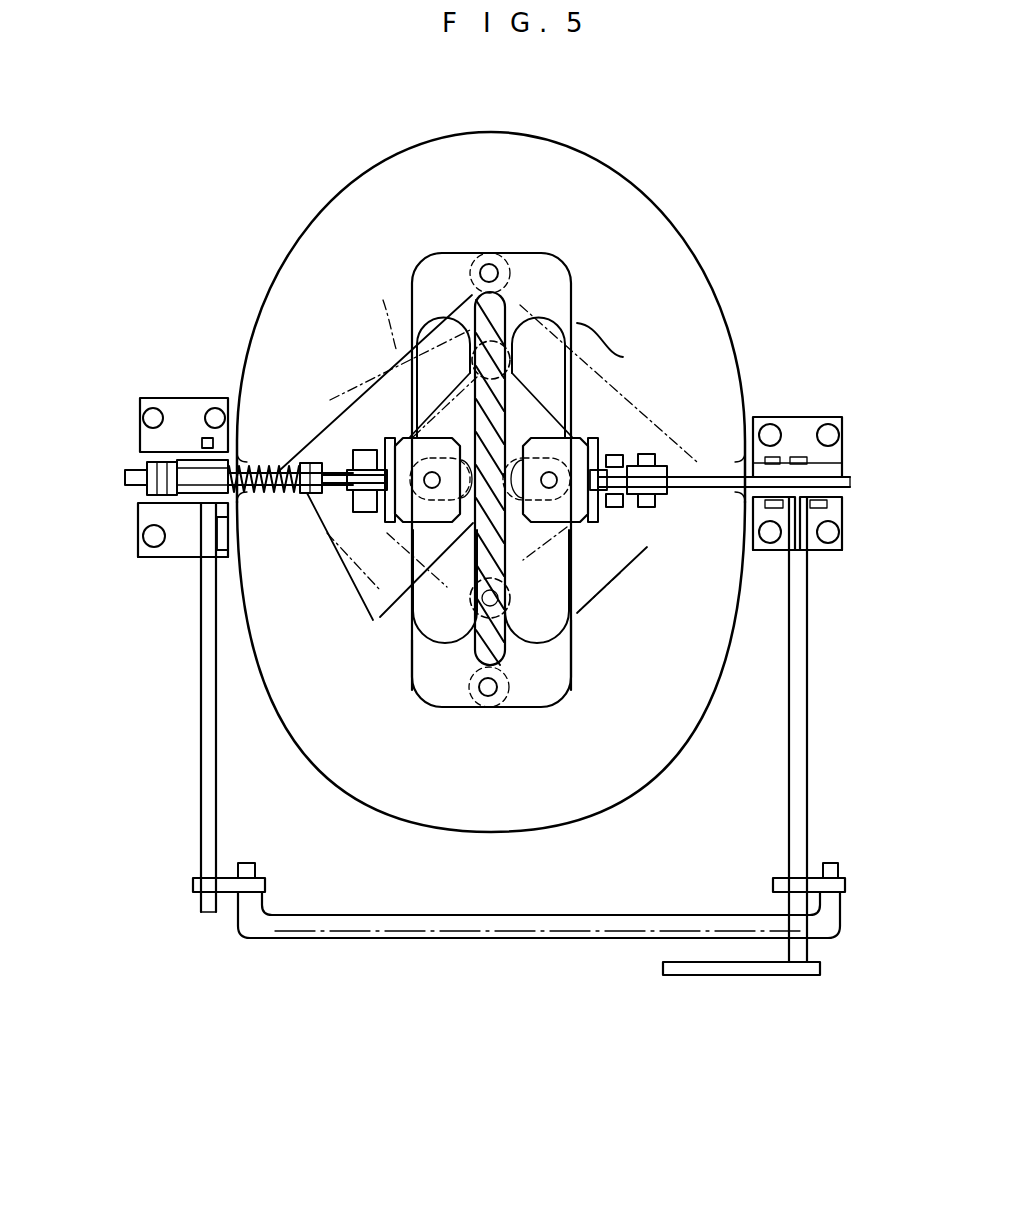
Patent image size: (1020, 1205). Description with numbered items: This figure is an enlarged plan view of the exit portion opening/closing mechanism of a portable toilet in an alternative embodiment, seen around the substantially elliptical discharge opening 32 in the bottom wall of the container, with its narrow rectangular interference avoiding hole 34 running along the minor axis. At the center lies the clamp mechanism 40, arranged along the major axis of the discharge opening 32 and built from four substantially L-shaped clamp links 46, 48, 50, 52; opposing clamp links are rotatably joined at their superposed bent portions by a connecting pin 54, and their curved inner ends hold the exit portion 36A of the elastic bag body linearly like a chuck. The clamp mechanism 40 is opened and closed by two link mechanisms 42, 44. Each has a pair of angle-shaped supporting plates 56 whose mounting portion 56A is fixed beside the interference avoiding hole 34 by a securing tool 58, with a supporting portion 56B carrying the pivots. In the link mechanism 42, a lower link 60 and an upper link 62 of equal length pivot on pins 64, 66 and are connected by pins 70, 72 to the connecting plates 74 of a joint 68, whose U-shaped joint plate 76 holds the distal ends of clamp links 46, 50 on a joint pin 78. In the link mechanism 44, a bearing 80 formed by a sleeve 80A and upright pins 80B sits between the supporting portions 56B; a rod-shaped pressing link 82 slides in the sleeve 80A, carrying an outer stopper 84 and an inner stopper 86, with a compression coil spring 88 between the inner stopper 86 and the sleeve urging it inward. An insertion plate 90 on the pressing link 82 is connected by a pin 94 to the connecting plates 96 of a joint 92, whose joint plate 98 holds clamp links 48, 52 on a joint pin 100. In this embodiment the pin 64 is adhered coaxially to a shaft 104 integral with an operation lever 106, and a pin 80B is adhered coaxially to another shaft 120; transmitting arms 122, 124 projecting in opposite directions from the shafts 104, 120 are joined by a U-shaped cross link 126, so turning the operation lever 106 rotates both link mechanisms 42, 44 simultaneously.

The discharge opening 32 is at (690, 712).
The interference avoiding hole 34 is at (247, 505).
The exit portion 36A is at (478, 600).
The clamp mechanism 40 is at (551, 705).
The link mechanism 42 is at (709, 468).
The link mechanism 44 is at (273, 460).
The clamp link 46 is at (600, 380).
The clamp link 48 is at (412, 330).
The clamp link 50 is at (580, 648).
The clamp link 52 is at (420, 688).
The connecting pin 54 is at (489, 262).
The supporting plate 56 is at (140, 415).
The mounting portion 56A is at (185, 558).
The supporting portion 56B is at (145, 525).
The securing tool 58 is at (150, 540).
The lower link 60 is at (848, 484).
The upper link 62 is at (648, 496).
The pin 64 is at (822, 425).
The pin 66 is at (772, 428).
The joint 68 is at (611, 462).
The pin 70 is at (648, 506).
The pin 72 is at (630, 508).
The connecting plate 74 is at (582, 524).
The joint plate 76 is at (504, 608).
The joint pin 78 is at (549, 472).
The bearing 80 is at (228, 344).
The sleeve 80A is at (180, 433).
The pin 80B is at (207, 440).
The pressing link 82 is at (132, 483).
The outer stopper 84 is at (152, 468).
The inner stopper 86 is at (312, 500).
The compression coil spring 88 is at (290, 495).
The insertion plate 90 is at (346, 465).
The joint 92 is at (385, 565).
The pin 94 is at (363, 452).
The connecting plate 96 is at (362, 513).
The joint plate 98 is at (392, 428).
The joint pin 100 is at (432, 472).
The shaft 104 is at (806, 772).
The operation lever 106 is at (720, 976).
The shaft 120 is at (201, 752).
The transmitting arm 122 is at (836, 878).
The transmitting arm 124 is at (230, 893).
The cross link 126 is at (452, 938).